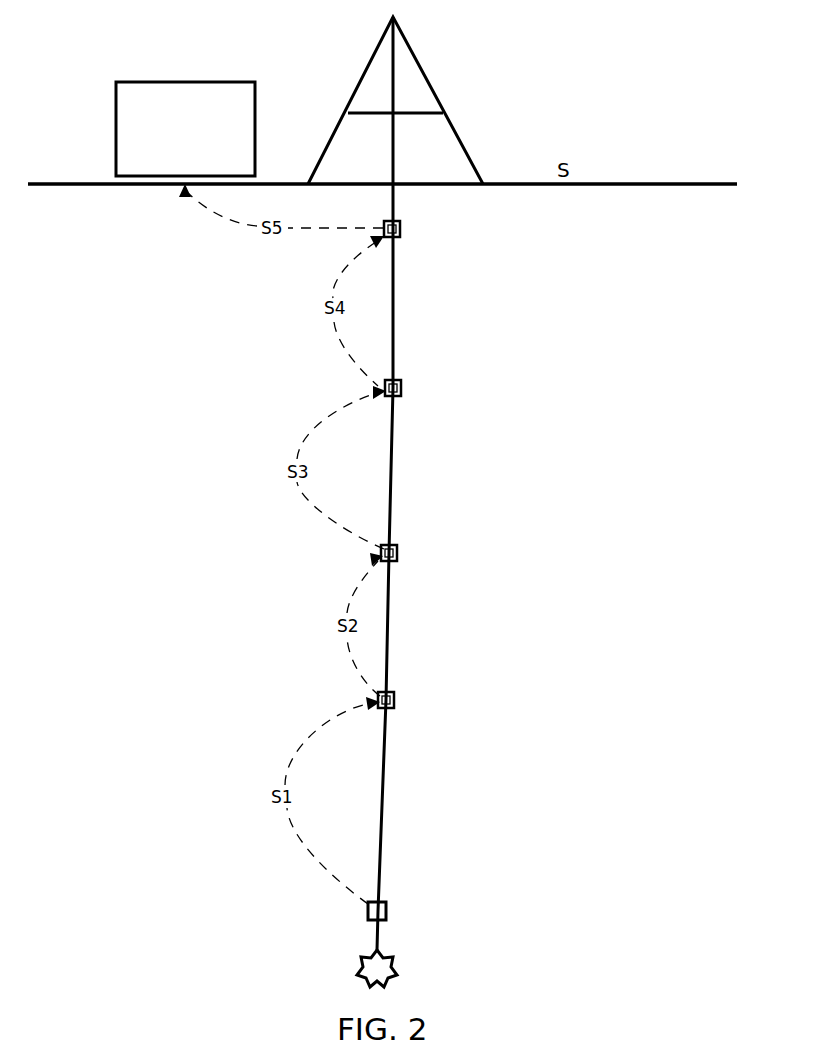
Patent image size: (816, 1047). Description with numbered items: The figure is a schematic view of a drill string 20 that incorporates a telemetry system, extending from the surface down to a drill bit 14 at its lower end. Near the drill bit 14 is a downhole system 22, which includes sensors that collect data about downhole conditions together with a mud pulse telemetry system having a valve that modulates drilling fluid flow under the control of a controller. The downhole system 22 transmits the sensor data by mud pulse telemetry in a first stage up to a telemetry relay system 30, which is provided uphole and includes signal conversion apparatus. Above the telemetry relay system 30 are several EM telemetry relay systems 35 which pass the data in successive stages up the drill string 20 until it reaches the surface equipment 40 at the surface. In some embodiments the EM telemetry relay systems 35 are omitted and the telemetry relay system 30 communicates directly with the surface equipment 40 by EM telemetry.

The drill bit 14 is at (393, 955).
The drill string 20 is at (600, 303).
The downhole system 22 is at (386, 903).
The telemetry relay system 30 is at (394, 700).
The EM telemetry relay systems 35 is at (400, 229).
The surface equipment 40 is at (115, 127).